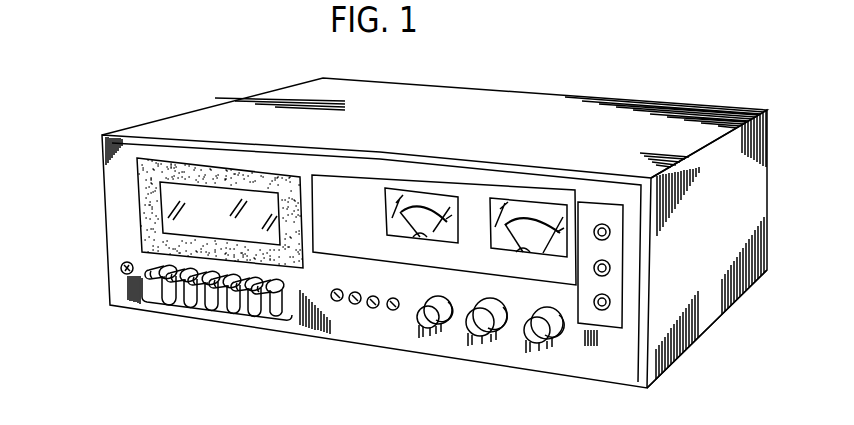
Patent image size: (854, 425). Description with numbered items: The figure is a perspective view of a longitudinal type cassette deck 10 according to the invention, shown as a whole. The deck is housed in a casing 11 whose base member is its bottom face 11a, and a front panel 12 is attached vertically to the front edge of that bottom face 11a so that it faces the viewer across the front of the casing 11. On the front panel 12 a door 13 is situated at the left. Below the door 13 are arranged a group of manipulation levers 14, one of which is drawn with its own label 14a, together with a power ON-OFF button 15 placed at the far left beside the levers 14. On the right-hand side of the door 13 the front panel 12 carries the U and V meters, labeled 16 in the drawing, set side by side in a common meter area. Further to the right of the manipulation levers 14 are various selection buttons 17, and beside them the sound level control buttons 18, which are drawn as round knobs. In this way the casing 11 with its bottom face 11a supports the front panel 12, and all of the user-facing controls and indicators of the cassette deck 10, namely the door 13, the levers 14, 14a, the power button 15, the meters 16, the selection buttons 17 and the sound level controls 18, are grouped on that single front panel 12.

The longitudinal type cassette deck 10 is at (185, 92).
The casing 11 is at (481, 88).
The bottom face 11a is at (683, 345).
The front panel 12 is at (110, 180).
The door 13 is at (228, 178).
The group of manipulation levers 14 is at (214, 318).
The switch 14a is at (288, 297).
The power ON-OFF button 15 is at (120, 269).
The meters 16 is at (567, 192).
The selection buttons 17 is at (443, 332).
The sound level control buttons 18 is at (557, 360).